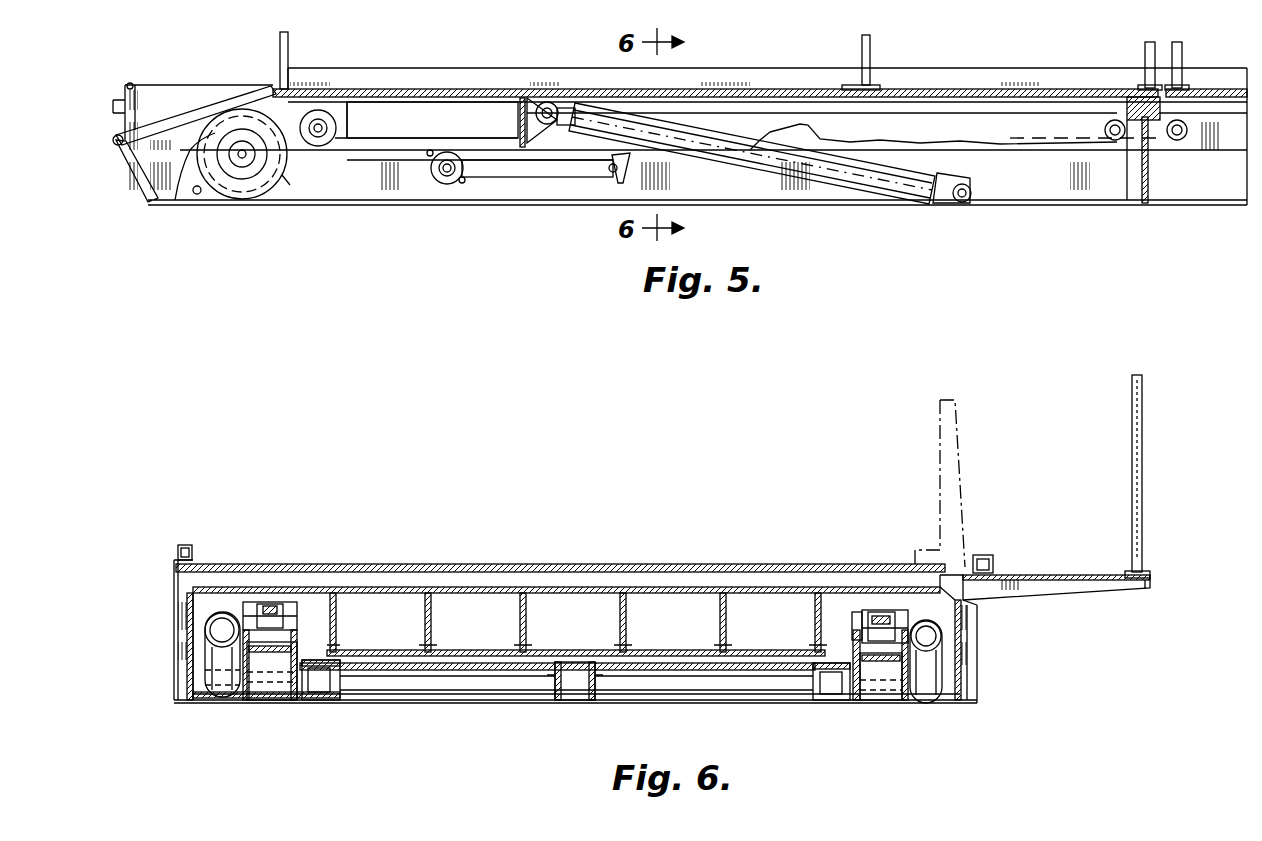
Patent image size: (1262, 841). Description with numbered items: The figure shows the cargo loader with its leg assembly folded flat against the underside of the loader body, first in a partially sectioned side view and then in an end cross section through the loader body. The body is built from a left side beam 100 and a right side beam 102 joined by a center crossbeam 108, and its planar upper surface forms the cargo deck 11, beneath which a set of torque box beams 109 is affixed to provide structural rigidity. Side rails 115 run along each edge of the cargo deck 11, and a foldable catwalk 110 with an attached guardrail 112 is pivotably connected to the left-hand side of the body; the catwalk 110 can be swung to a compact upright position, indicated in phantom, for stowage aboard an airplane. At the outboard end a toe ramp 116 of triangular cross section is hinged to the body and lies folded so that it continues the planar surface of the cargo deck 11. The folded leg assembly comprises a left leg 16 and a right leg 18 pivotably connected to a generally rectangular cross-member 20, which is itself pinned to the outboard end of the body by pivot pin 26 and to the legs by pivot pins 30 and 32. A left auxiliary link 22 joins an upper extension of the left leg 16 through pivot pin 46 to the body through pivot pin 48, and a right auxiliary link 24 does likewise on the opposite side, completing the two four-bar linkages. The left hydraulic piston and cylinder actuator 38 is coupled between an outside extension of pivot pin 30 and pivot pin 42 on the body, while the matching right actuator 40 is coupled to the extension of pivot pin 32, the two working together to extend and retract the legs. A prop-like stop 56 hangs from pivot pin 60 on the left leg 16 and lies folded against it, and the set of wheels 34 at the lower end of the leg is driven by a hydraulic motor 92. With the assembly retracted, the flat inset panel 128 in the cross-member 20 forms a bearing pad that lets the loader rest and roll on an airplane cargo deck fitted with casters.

In FIG. 6, the cargo deck 11 is at (400, 565).
In FIG. 5, the left leg 16 is at (1062, 192).
In FIG. 6, the left leg 16 is at (876, 703).
In FIG. 6, the right leg 18 is at (268, 702).
In FIG. 6, the cross-member 20 is at (576, 703).
In FIG. 5, the left auxiliary link 22 is at (728, 102).
In FIG. 6, the left auxiliary link 22 is at (885, 610).
In FIG. 6, the right auxiliary link 24 is at (272, 603).
In FIG. 5, the pivot pin 26 is at (196, 195).
In FIG. 5, the pivot pin 30 is at (962, 203).
In FIG. 6, the pivot pin 30 is at (810, 690).
In FIG. 6, the pivot pin 32 is at (340, 692).
In FIG. 5, the set of wheels 34 is at (244, 200).
In FIG. 5, the left linear hydraulic piston and cylinder actuator 38 is at (842, 175).
In FIG. 6, the left linear hydraulic piston and cylinder actuator 38 is at (935, 705).
In FIG. 6, the right linear hydraulic piston and cylinder actuator 40 is at (210, 655).
In FIG. 5, the pivot pin 42 is at (540, 108).
In FIG. 5, the pivot pin 46 is at (1115, 120).
In FIG. 6, the pivot pin 46 is at (855, 625).
In FIG. 5, the pivot pin 48 is at (560, 110).
In FIG. 5, the stop 56 is at (540, 178).
In FIG. 5, the pivot pin 60 is at (446, 185).
In FIG. 5, the hydraulic motor 92 is at (322, 112).
In FIG. 5, the left side beam 100 is at (146, 166).
In FIG. 6, the left side beam 100 is at (980, 660).
In FIG. 6, the right side beam 102 is at (180, 625).
In FIG. 5, the center crossbeam 108 is at (1143, 197).
In FIG. 5, the torque box beams 109 is at (426, 102).
In FIG. 6, the torque box beams 109 is at (517, 618).
In FIG. 6, the foldable catwalk 110 is at (1068, 578).
In FIG. 5, the guardrail 112 is at (872, 62).
In FIG. 6, the guardrail 112 is at (1142, 440).
In FIG. 5, the side rails 115 is at (945, 80).
In FIG. 6, the side rails 115 is at (187, 545).
In FIG. 5, the toe ramp 116 is at (172, 84).
In FIG. 6, the inset panel 128 is at (470, 697).